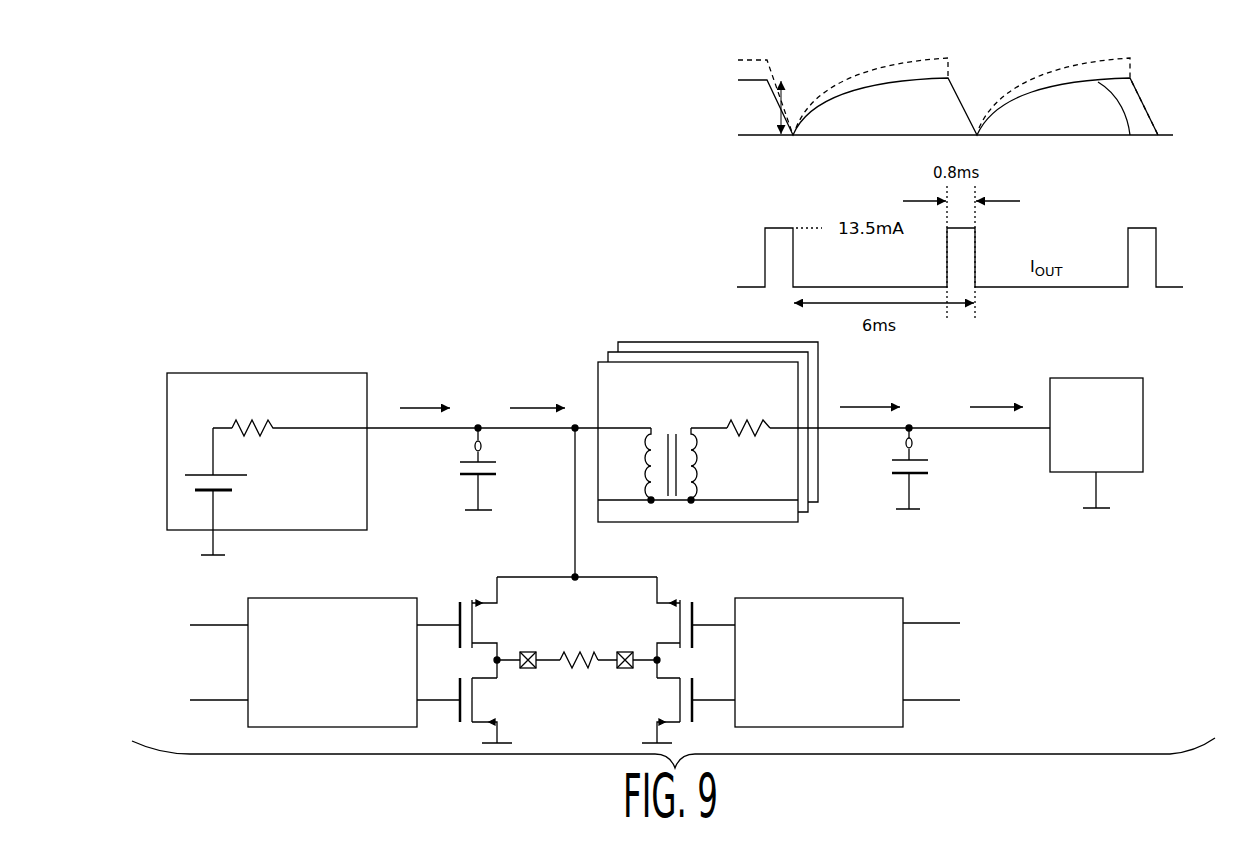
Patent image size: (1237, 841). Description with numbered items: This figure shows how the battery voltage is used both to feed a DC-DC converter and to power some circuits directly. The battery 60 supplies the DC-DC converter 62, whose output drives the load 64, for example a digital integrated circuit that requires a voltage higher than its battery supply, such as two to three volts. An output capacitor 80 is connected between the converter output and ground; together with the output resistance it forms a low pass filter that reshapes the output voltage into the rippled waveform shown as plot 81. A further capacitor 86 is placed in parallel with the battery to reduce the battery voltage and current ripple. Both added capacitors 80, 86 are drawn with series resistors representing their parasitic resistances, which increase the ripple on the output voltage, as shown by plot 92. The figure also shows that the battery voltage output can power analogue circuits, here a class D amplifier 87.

The battery 60 is at (367, 510).
The DC-DC converter 62 is at (790, 525).
The load 64 is at (1050, 465).
The output capacitor 80 is at (916, 475).
The plot of output voltage 81 is at (1130, 135).
The capacitor 86 is at (485, 478).
The class D amplifier 87 is at (937, 612).
The plot of output voltage ripple 92 is at (1077, 68).